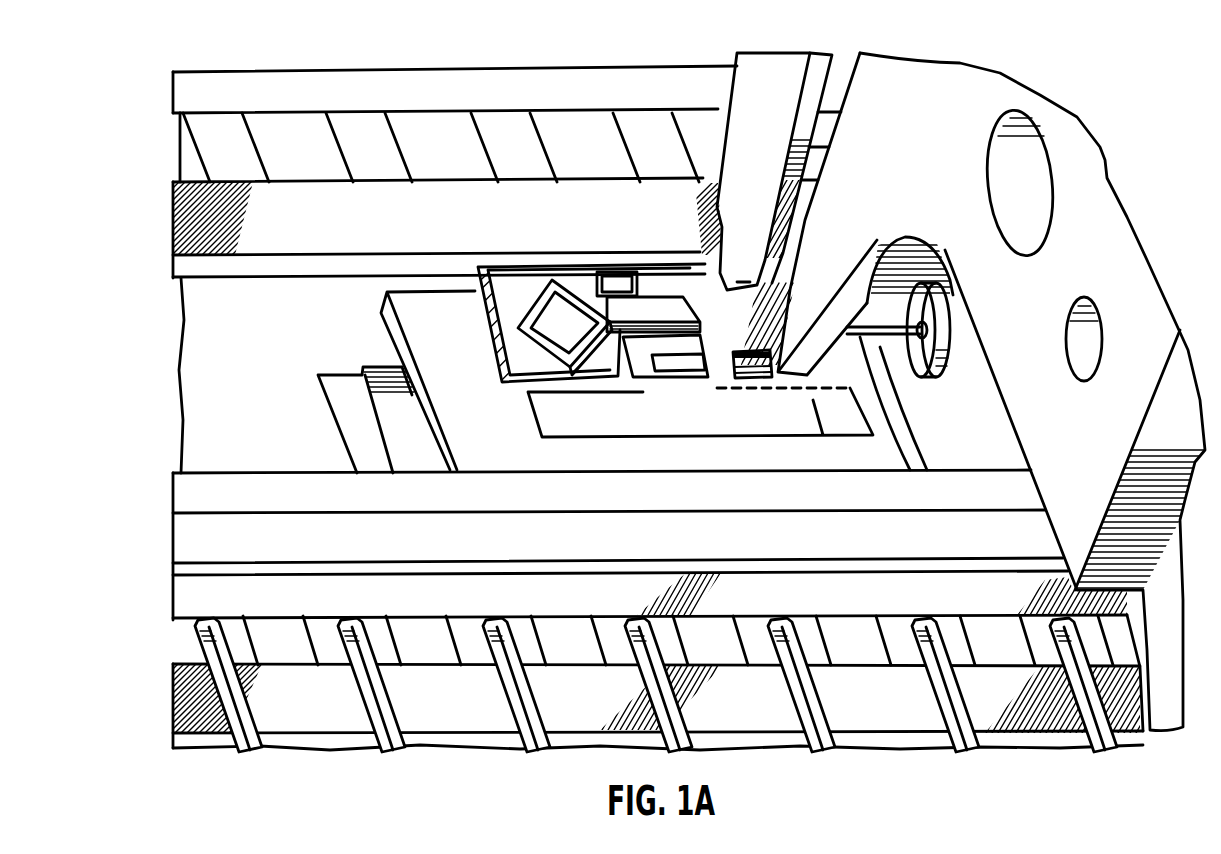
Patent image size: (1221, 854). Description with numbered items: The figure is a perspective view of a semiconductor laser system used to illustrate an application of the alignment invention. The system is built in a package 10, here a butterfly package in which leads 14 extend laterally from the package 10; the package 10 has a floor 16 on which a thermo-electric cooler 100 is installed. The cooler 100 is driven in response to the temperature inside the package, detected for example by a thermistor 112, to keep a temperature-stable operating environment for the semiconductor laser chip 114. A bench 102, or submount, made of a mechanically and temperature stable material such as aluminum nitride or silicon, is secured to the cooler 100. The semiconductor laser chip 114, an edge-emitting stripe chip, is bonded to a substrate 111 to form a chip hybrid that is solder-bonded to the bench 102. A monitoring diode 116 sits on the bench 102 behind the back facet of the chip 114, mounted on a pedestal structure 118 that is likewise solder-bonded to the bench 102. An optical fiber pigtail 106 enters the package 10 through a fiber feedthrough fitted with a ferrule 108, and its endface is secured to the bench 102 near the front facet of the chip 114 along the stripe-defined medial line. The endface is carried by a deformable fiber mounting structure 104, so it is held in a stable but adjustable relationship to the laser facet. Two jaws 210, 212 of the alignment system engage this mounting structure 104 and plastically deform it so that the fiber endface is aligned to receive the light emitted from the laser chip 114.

The package 10 is at (200, 490).
The leads 14 is at (1110, 742).
The floor 16 is at (272, 434).
The thermo-electric cooler 100 is at (340, 374).
The bench 102 is at (513, 307).
The deformable fiber mounting structure 104 is at (762, 378).
The optical fiber pigtail 106 is at (910, 470).
The ferrule 108 is at (645, 317).
The substrate 111 is at (642, 350).
The thermistor 112 is at (582, 272).
The semiconductor laser chip 114 is at (677, 297).
The monitoring diode 116 is at (517, 326).
The pedestal structure 118 is at (528, 372).
The jaw 210 is at (763, 92).
The jaw 212 is at (881, 80).